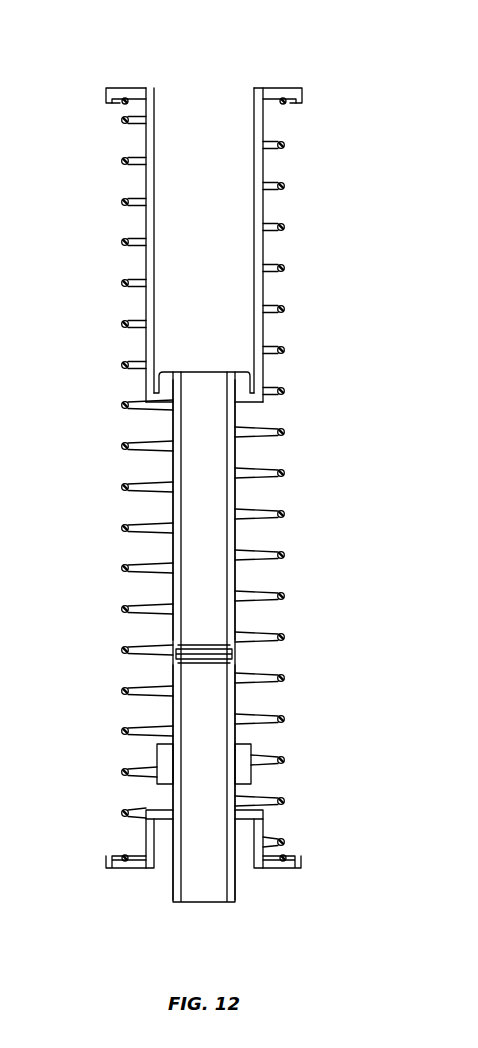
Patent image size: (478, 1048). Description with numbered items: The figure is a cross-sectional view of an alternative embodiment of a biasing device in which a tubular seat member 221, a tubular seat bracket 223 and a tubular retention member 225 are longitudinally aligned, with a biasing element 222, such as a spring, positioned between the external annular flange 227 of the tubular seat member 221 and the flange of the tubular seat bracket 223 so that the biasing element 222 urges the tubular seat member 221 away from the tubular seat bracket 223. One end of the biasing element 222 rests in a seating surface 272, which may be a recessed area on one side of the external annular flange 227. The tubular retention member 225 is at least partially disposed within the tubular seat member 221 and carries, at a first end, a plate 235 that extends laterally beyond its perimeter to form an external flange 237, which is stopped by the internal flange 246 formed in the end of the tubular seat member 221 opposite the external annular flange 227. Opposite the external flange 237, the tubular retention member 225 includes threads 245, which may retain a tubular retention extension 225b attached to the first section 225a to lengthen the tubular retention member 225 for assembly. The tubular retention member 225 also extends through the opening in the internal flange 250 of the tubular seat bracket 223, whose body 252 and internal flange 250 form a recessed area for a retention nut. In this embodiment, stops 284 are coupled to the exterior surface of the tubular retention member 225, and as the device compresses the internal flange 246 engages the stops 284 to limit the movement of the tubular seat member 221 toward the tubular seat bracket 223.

The tubular seat member 221 is at (320, 195).
The biasing element 222 is at (285, 270).
The tubular seat bracket 223 is at (333, 850).
The tubular retention member 225 is at (322, 572).
The first section of the tubular retention member 225a is at (237, 498).
The tubular retention extension 225b is at (236, 715).
The external annular flange 227 is at (283, 88).
The plate 235 is at (239, 372).
The external flange 237 is at (167, 378).
The threads 245 is at (214, 647).
The internal flange 246 is at (249, 403).
The internal flange 250 is at (246, 809).
The body 252 is at (263, 827).
The seating surface 272 is at (284, 100).
The stops 284 is at (167, 763).